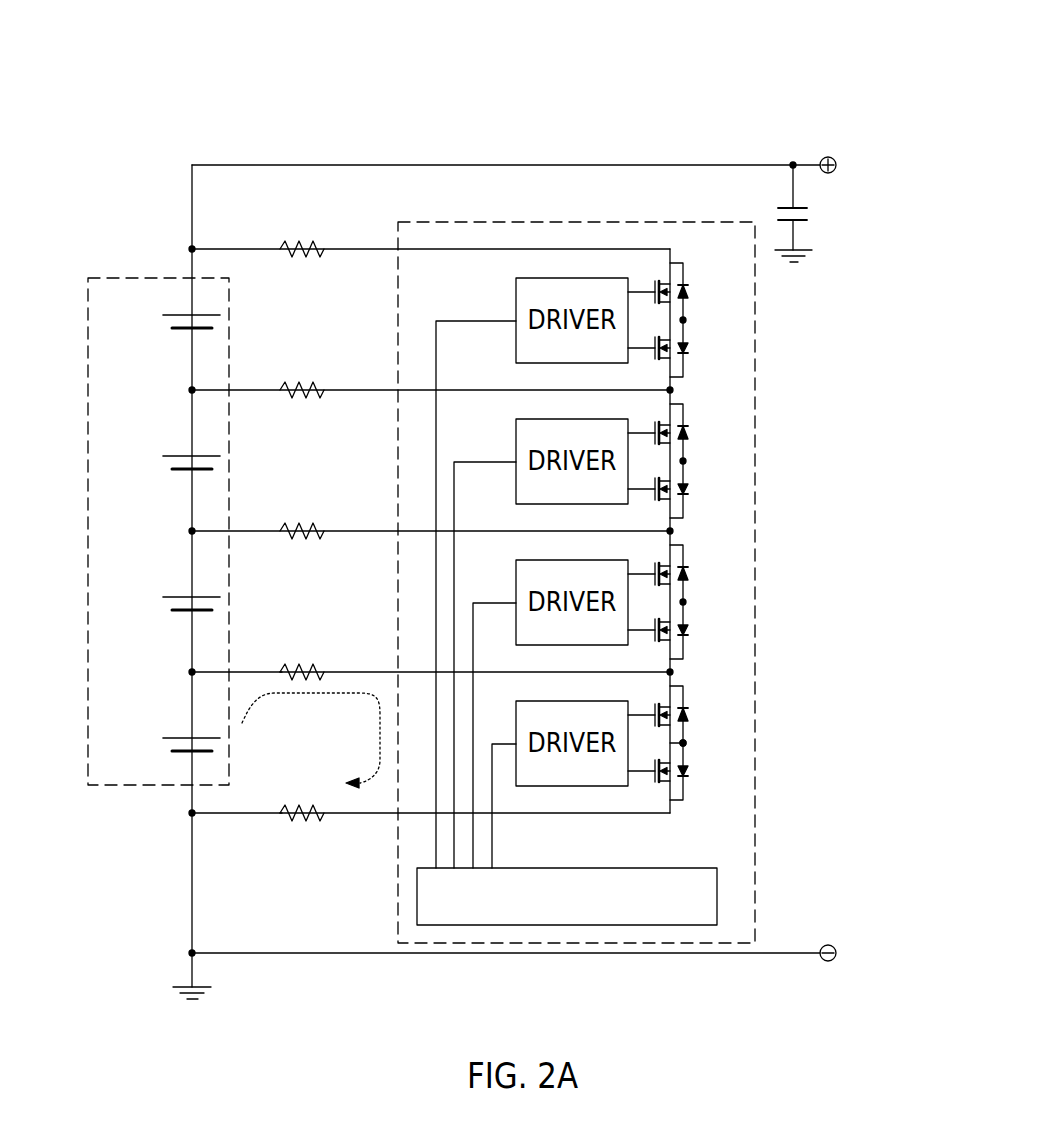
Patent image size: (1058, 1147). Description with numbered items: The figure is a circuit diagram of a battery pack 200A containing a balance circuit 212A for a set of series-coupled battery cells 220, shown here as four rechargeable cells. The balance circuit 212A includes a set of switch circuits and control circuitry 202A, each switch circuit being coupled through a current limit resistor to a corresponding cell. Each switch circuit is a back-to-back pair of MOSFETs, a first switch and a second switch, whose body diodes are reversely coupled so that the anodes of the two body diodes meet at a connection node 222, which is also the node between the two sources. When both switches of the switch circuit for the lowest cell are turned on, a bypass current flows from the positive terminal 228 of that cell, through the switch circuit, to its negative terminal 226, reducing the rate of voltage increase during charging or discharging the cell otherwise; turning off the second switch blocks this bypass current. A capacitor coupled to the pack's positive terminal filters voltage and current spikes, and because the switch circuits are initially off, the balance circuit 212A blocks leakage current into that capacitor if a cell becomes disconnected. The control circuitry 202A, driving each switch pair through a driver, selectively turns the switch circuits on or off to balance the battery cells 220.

The battery pack 200A is at (101, 165).
The battery cells 220 is at (153, 278).
The positive terminal 228 is at (192, 672).
The negative terminal 226 is at (192, 813).
The balance circuit 212A is at (755, 432).
The connection node 222 is at (685, 743).
The control circuitry 202A is at (622, 868).